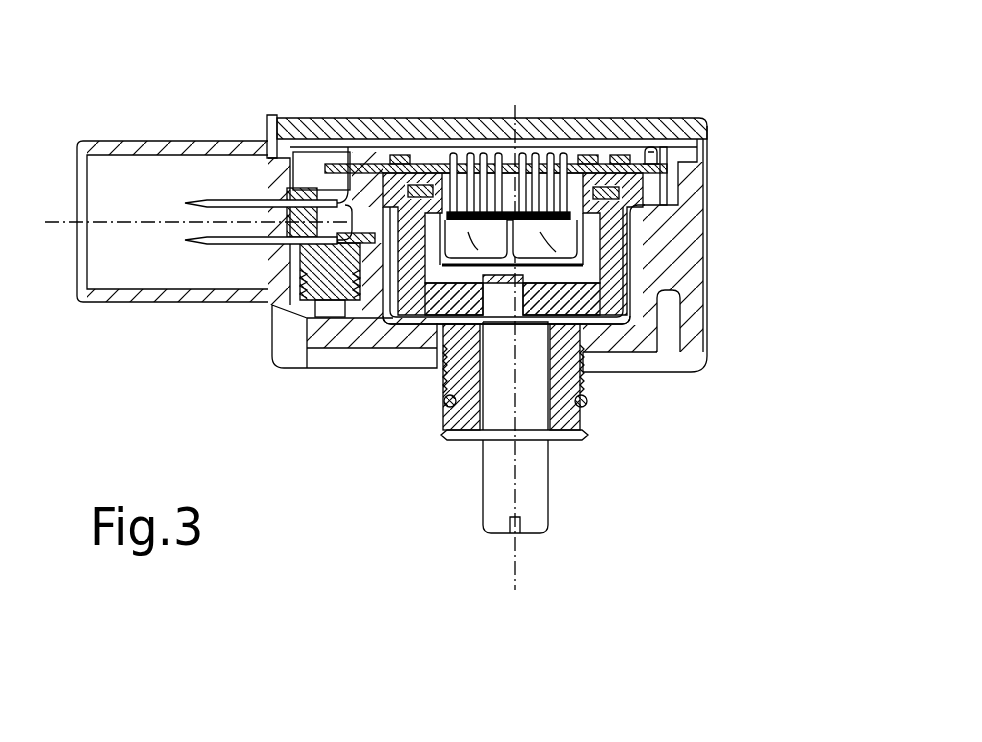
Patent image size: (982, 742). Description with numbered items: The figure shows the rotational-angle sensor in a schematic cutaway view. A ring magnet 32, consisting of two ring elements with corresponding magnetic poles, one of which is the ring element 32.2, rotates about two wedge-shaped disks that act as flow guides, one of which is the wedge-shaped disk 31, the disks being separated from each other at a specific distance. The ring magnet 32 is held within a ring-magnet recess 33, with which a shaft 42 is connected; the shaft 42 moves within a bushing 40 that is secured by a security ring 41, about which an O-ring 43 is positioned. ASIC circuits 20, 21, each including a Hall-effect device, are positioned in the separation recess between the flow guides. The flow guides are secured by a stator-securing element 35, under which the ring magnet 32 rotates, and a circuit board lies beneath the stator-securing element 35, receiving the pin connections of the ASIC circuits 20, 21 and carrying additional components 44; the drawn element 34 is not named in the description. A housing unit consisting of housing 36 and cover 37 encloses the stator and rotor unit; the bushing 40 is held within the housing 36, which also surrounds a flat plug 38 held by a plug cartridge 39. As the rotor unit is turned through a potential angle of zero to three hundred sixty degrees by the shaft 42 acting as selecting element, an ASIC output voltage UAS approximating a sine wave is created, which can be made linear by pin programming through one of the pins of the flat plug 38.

The ASIC circuit 20 is at (298, 370).
The ASIC circuit 21 is at (562, 270).
The wedge-shaped disk 31 is at (603, 350).
The ring magnet 32 is at (645, 207).
The ring element 32.2 is at (350, 118).
The ring-magnet recess 33 is at (610, 300).
The cover plate 34 is at (423, 118).
The stator-securing element 35 is at (428, 164).
The housing 36 is at (203, 152).
The cover 37 is at (660, 118).
The flat plug 38 is at (206, 250).
The plug cartridge 39 is at (272, 305).
The bushing 40 is at (448, 432).
The security ring 41 is at (462, 440).
The shaft 42 is at (541, 487).
The O-ring 43 is at (587, 403).
The additional components 44 is at (632, 158).
The ASIC output voltage UAS is at (517, 118).